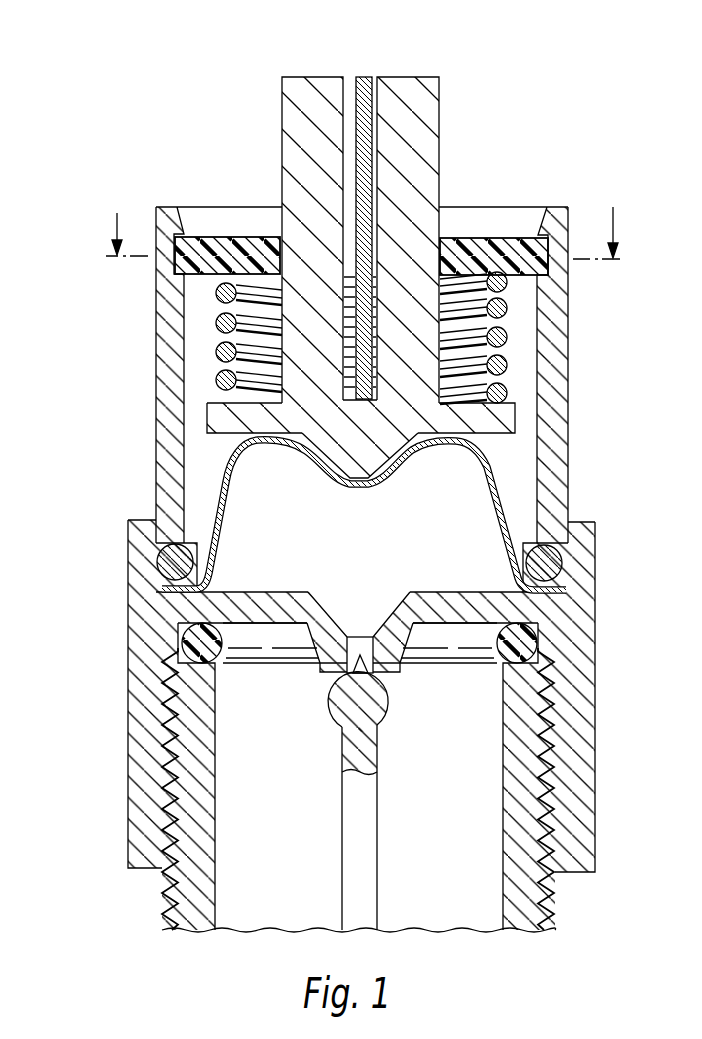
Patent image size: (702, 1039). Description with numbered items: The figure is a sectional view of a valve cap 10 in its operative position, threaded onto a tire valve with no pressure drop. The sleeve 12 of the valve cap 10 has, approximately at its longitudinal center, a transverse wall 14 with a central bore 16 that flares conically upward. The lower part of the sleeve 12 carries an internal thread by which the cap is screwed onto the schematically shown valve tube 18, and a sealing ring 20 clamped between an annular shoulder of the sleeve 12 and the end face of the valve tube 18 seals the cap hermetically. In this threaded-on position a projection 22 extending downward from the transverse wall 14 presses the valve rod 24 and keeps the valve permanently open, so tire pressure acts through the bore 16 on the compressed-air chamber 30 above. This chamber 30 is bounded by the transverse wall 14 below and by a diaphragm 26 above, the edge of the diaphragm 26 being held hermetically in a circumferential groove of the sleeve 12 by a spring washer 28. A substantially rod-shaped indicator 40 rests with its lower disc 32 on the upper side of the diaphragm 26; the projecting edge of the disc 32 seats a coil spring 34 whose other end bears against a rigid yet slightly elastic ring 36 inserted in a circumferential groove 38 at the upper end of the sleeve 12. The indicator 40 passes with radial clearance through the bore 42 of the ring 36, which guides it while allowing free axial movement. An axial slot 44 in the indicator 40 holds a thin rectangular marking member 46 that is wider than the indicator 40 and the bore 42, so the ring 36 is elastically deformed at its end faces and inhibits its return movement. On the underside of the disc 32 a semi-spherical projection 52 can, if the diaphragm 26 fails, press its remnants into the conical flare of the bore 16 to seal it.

The valve cap 10 is at (110, 707).
The sleeve 12 is at (557, 408).
The transverse wall 14 is at (256, 602).
The central bore 16 is at (366, 614).
The valve tube 18 is at (172, 892).
The sealing ring 20 is at (196, 647).
The projection 22 is at (390, 667).
The valve rod 24 is at (333, 705).
The diaphragm 26 is at (262, 443).
The spring washer 28 is at (168, 562).
The compressed-air chamber 30 is at (371, 538).
The disc 32 is at (214, 410).
The coil spring 34 is at (506, 340).
The ring 36 is at (206, 249).
The circumferential groove 38 is at (532, 250).
The indicator 40 is at (432, 118).
The bore 42 is at (283, 242).
The axial slot 44 is at (350, 97).
The marking member 46 is at (361, 90).
The semi-spherical projection 52 is at (392, 441).